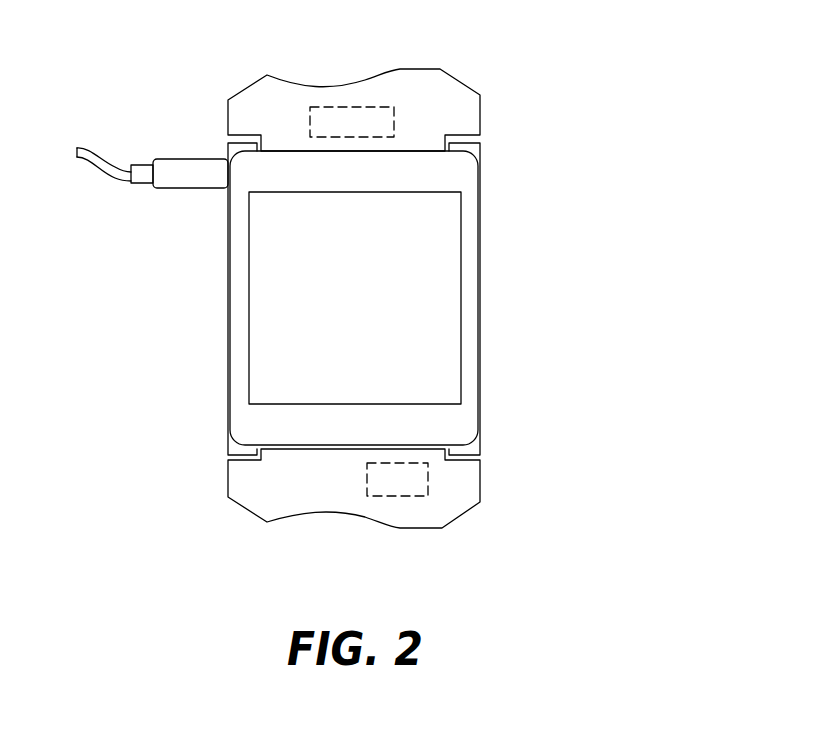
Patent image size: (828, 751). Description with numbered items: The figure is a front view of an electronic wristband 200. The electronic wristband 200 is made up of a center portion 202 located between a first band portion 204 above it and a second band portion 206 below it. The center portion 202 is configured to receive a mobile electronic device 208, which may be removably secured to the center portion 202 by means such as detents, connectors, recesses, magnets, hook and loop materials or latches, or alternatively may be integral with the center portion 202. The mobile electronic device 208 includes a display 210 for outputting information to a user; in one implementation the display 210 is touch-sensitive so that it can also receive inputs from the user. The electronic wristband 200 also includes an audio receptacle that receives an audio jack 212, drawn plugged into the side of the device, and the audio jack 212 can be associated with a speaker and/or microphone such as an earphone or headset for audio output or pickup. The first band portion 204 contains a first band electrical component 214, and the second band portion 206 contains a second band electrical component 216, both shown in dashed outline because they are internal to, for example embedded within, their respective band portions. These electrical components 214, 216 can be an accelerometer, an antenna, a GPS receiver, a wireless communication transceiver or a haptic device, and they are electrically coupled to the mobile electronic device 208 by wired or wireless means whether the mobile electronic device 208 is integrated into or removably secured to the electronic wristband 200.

The electronic wristband 200 is at (541, 134).
The center portion 202 is at (546, 302).
The first band portion 204 is at (435, 88).
The second band portion 206 is at (256, 483).
The mobile electronic device 208 is at (248, 425).
The display 210 is at (259, 260).
The audio jack 212 is at (167, 188).
The first band electrical component 214 is at (320, 107).
The second band electrical component 216 is at (413, 497).